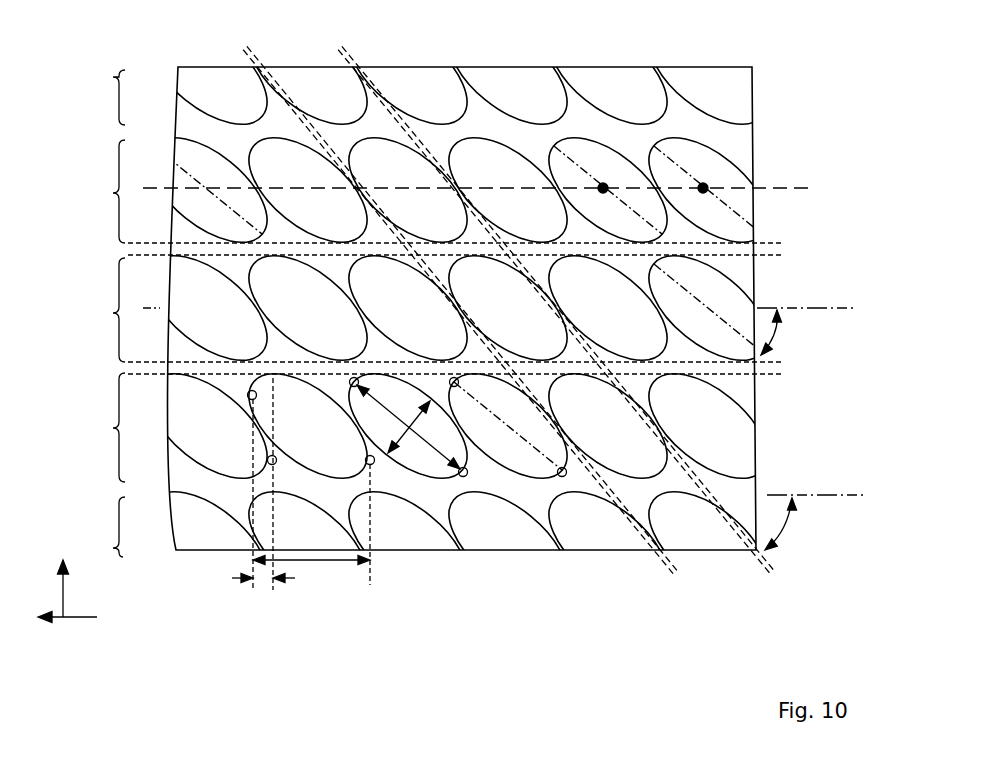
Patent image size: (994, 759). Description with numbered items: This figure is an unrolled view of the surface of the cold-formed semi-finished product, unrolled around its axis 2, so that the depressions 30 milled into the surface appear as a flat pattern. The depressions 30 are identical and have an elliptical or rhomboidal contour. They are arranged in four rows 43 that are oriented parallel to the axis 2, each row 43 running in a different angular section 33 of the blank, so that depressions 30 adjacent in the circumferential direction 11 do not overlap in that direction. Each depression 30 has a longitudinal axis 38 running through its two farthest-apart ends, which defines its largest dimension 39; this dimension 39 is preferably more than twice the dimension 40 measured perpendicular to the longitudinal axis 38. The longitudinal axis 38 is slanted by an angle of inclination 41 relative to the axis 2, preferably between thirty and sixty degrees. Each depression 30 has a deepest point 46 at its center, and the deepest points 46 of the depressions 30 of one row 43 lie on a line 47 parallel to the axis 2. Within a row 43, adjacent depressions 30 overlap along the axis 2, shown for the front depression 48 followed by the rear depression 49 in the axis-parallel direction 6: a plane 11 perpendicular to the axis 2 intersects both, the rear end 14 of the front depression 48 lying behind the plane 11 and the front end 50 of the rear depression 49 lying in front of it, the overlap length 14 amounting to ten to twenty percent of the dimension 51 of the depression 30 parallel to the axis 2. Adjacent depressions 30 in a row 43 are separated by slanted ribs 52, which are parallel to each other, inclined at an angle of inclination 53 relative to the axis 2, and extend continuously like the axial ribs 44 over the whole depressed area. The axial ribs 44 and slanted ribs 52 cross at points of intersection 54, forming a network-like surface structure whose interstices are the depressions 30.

The axis 2 is at (842, 307).
The axis-parallel direction 6 is at (80, 620).
The plane 11 is at (58, 603).
The rear end 14 is at (297, 442).
The depression 30 is at (220, 142).
The angular section 33 is at (99, 310).
The longitudinal axis 38 is at (707, 308).
The largest dimension 39 is at (463, 476).
The dimension perpendicular to the longitudinal axis 40 is at (433, 450).
The angle of inclination 41 is at (773, 333).
The row 43 is at (148, 92).
The axial rib 44 is at (708, 373).
The deepest point 46 is at (603, 188).
The line 47 is at (768, 188).
The front depression 48 is at (372, 561).
The rear depression 49 is at (205, 440).
The front end 50 is at (252, 399).
The dimension parallel to the axis 51 is at (297, 563).
The slanted rib 52 is at (672, 373).
The angle of inclination 53 is at (783, 528).
The point of intersection 54 is at (507, 373).